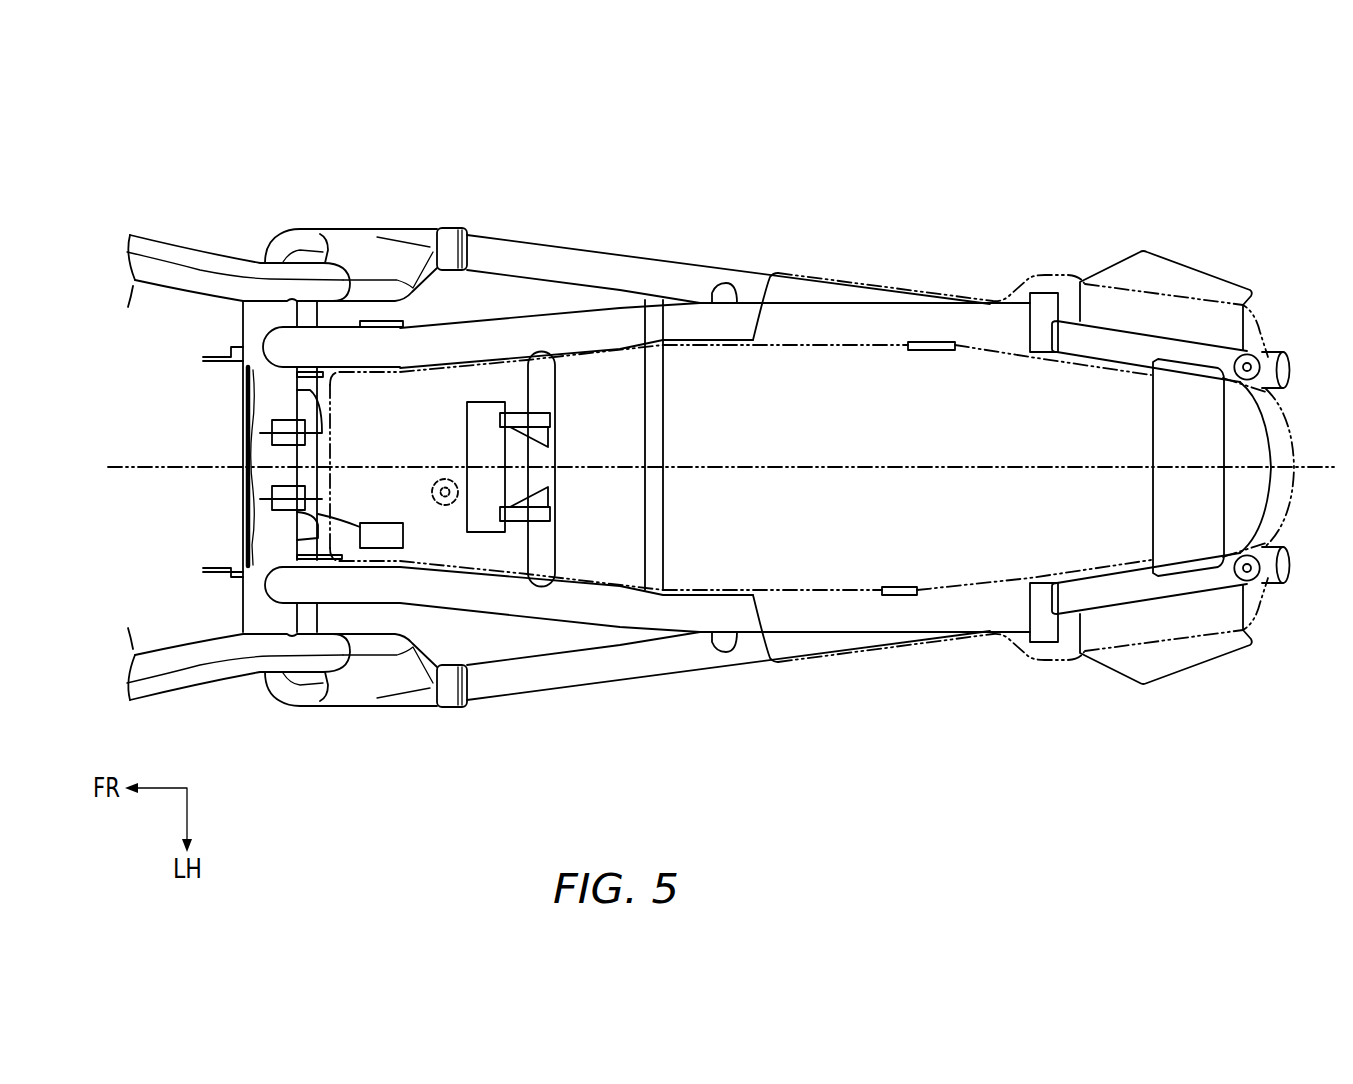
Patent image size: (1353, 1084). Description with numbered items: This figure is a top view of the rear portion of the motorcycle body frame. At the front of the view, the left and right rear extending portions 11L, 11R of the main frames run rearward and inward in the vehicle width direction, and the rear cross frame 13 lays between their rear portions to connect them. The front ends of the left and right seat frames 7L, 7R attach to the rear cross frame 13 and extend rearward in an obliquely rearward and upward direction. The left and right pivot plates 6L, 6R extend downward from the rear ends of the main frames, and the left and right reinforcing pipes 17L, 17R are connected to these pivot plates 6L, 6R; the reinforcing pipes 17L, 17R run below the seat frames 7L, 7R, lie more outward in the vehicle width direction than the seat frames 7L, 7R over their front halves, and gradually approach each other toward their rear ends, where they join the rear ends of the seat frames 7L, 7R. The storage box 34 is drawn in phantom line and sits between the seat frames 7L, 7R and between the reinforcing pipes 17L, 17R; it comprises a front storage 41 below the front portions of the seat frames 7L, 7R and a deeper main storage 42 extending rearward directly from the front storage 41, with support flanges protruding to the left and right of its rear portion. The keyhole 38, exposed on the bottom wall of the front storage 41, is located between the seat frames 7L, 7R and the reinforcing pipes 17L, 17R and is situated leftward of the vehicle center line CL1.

The center line CL1 is at (137, 466).
The rear extending portion 11R is at (200, 262).
The rear extending portion 11L is at (203, 662).
The pivot plate 6R is at (352, 250).
The pivot plate 6L is at (358, 688).
The reinforcing pipe 17R is at (597, 263).
The reinforcing pipe 17L is at (594, 674).
The front storage 41 is at (415, 357).
The seat frame 7R is at (567, 328).
The seat frame 7L is at (688, 615).
The main storage 42 is at (852, 345).
The storage box 34 is at (696, 330).
The rear cross frame 13 is at (260, 382).
The keyhole 38 is at (447, 506).